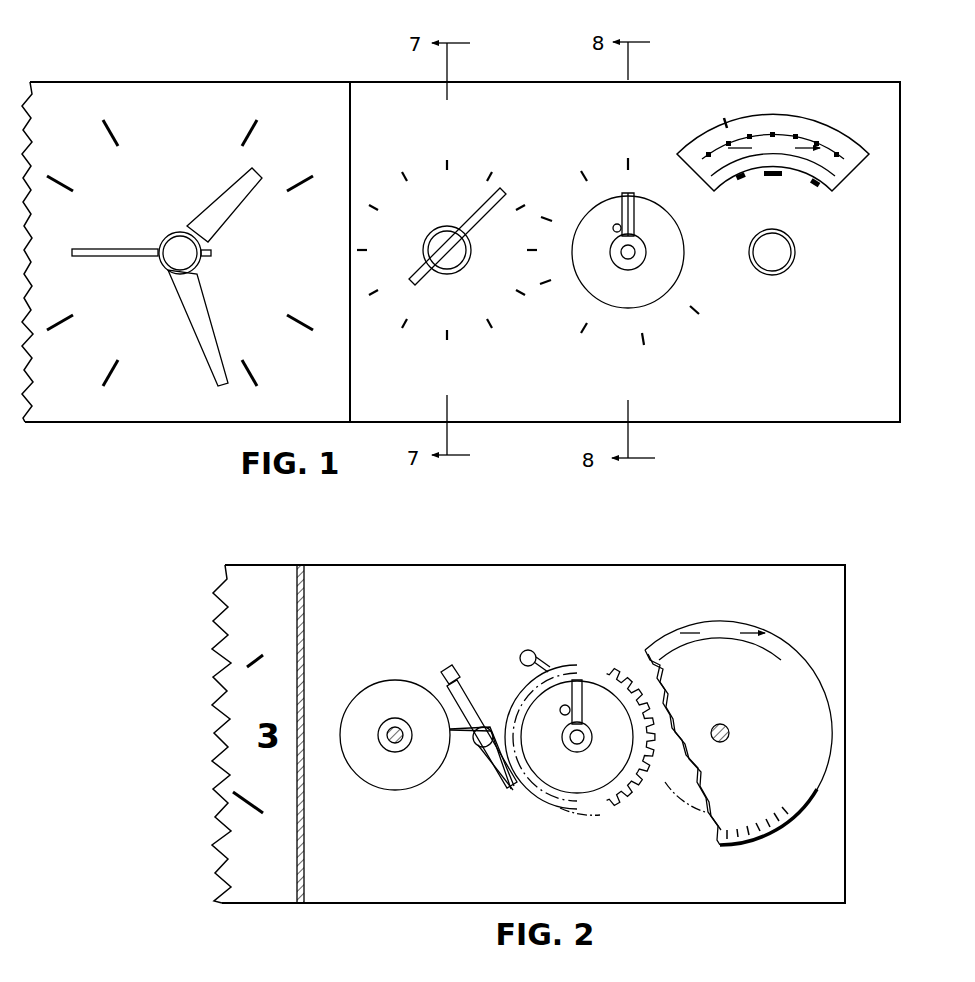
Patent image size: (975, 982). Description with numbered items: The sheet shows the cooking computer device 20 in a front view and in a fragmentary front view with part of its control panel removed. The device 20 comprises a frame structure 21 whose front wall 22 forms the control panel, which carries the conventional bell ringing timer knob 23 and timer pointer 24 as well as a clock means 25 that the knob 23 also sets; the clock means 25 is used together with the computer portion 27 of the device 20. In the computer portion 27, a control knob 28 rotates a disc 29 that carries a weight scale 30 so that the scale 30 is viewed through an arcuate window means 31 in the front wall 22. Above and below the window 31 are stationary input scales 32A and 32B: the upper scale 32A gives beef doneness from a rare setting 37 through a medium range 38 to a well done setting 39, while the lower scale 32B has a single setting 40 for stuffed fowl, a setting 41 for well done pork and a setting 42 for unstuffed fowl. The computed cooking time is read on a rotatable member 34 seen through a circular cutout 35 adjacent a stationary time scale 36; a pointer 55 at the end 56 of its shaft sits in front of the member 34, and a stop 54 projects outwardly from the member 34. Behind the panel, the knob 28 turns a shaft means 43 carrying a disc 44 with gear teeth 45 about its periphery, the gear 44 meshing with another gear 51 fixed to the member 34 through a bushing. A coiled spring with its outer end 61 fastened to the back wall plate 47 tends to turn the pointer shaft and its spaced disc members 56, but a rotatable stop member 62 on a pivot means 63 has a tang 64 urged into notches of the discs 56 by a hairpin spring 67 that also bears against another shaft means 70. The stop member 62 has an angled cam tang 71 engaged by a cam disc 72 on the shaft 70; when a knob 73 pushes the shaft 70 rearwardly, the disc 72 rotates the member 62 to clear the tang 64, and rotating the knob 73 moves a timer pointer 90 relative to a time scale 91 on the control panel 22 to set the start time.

In FIG. 1, the cooking computer device 20 is at (556, 72).
In FIG. 2, the cooking computer device 20 is at (810, 560).
In FIG. 1, the frame structure 21 is at (820, 82).
In FIG. 1, the front wall 22 is at (830, 402).
In FIG. 1, the bell ringing timer settable knob 23 is at (172, 263).
In FIG. 1, the timer pointer 24 is at (92, 249).
In FIG. 1, the clock means 25 is at (208, 158).
In FIG. 1, the computer portion 27 is at (738, 352).
In FIG. 1, the control knob 28 is at (773, 258).
In FIG. 1, the disc 29 is at (830, 168).
In FIG. 2, the disc 29 is at (800, 690).
In FIG. 2, the weight scale 30 is at (790, 832).
In FIG. 1, the arcuate window means 31 is at (806, 184).
In FIG. 1, the upper stationary scale 32A is at (723, 126).
In FIG. 1, the lower stationary scale 32B is at (769, 180).
In FIG. 1, the rotatable member 34 is at (656, 297).
In FIG. 2, the rotatable member 34 is at (572, 778).
In FIG. 1, the circular cutout 35 is at (620, 212).
In FIG. 1, the stationary time scale 36 is at (580, 294).
In FIG. 1, the rare setting 37 is at (692, 128).
In FIG. 1, the medium range 38 is at (768, 112).
In FIG. 1, the well done setting 39 is at (852, 150).
In FIG. 1, the stuffed fowl setting 40 is at (790, 180).
In FIG. 1, the well done pork setting 41 is at (822, 180).
In FIG. 1, the unstuffed fowl setting 42 is at (745, 178).
In FIG. 2, the shaft means 43 is at (730, 728).
In FIG. 2, the disc 44 is at (680, 780).
In FIG. 2, the gear teeth 45 is at (664, 795).
In FIG. 2, the back wall plate 47 is at (375, 590).
In FIG. 2, the gear 51 is at (616, 665).
In FIG. 1, the stop 54 is at (613, 228).
In FIG. 2, the stop 54 is at (560, 710).
In FIG. 1, the pointer 55 is at (632, 210).
In FIG. 1, the end of shaft 56 is at (632, 255).
In FIG. 2, the end of shaft 56 is at (580, 742).
In FIG. 2, the outer end of coiled spring 61 is at (540, 660).
In FIG. 2, the rotatable stop member 62 is at (478, 695).
In FIG. 2, the pivot means 63 is at (480, 748).
In FIG. 2, the tang 64 is at (520, 792).
In FIG. 2, the hairpin spring 67 is at (492, 765).
In FIG. 2, the shaft means 70 is at (388, 746).
In FIG. 2, the angled cam tang 71 is at (446, 675).
In FIG. 2, the cam disc 72 is at (410, 772).
In FIG. 1, the knob 73 is at (426, 234).
In FIG. 1, the timer pointer 90 is at (476, 212).
In FIG. 1, the time scale 91 is at (388, 322).